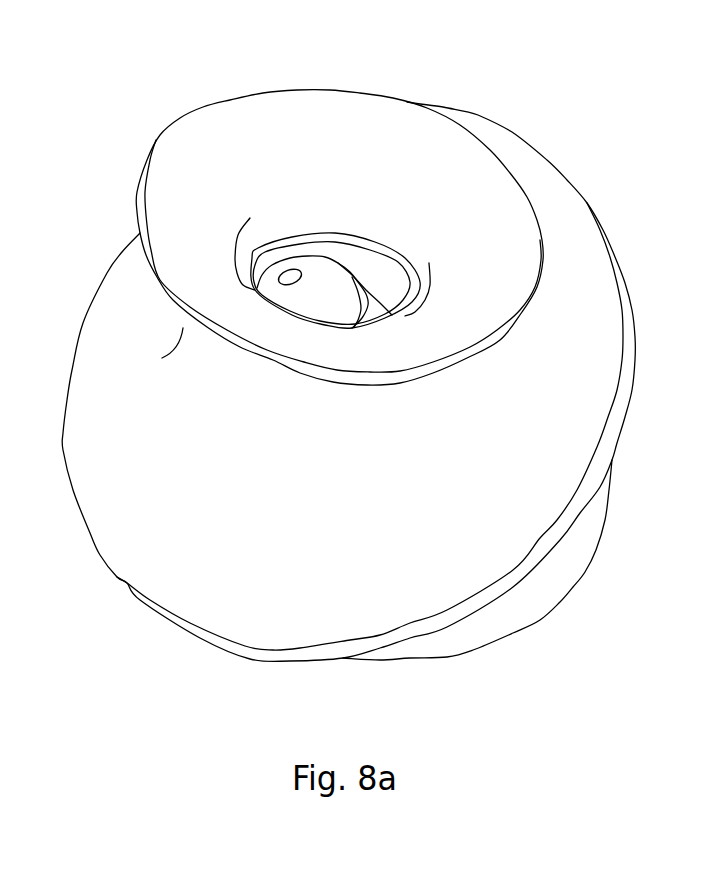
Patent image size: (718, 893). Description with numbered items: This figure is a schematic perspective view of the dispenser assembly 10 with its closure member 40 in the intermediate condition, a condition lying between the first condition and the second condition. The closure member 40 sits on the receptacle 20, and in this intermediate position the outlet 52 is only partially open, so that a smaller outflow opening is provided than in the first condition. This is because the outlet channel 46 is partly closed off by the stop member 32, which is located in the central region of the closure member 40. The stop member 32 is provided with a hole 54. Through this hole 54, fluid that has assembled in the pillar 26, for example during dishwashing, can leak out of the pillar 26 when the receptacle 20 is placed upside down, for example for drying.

The dispenser assembly 10 is at (480, 117).
The receptacle 20 is at (535, 608).
The closure member 40 is at (570, 222).
The outlet channel 46 is at (372, 274).
The pillar 26 is at (312, 184).
The stop member 32 is at (318, 280).
The outlet 52 is at (353, 232).
The hole 54 is at (290, 278).